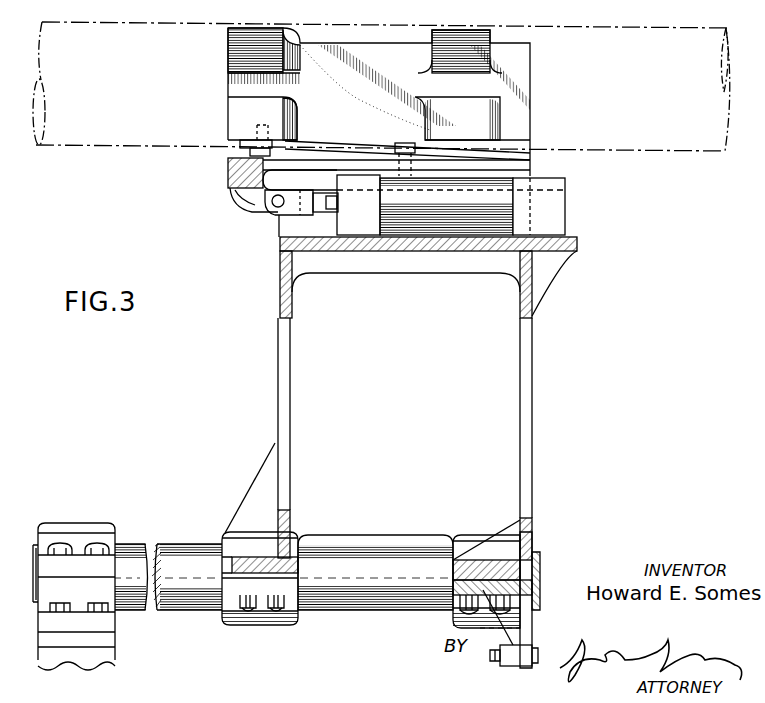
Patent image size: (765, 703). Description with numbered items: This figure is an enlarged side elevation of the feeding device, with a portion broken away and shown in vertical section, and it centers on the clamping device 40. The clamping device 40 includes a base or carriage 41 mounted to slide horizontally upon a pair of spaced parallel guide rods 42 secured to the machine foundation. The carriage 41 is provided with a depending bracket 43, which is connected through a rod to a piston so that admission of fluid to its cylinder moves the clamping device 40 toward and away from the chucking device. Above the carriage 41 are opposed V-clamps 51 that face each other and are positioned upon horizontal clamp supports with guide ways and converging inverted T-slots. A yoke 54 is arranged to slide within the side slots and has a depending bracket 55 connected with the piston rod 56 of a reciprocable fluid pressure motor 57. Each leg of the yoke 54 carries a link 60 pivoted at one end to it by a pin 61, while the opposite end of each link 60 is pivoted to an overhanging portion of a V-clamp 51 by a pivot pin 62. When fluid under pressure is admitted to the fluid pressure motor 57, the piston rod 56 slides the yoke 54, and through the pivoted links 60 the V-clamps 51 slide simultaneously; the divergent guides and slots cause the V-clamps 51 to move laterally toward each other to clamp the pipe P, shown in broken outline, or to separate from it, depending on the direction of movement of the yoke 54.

The pipe P is at (644, 29).
The V-clamps 51 is at (351, 108).
The link 60 is at (338, 148).
The pin 61 is at (413, 134).
The pivot pin 62 is at (238, 150).
The yoke 54 is at (228, 176).
The depending bracket 55 is at (256, 207).
The piston rod 56 is at (302, 216).
The fluid pressure motor 57 is at (412, 230).
The base or carriage 41 is at (280, 286).
The clamping device 40 is at (272, 368).
The guide rods 42 is at (193, 548).
The depending bracket 43 is at (526, 634).